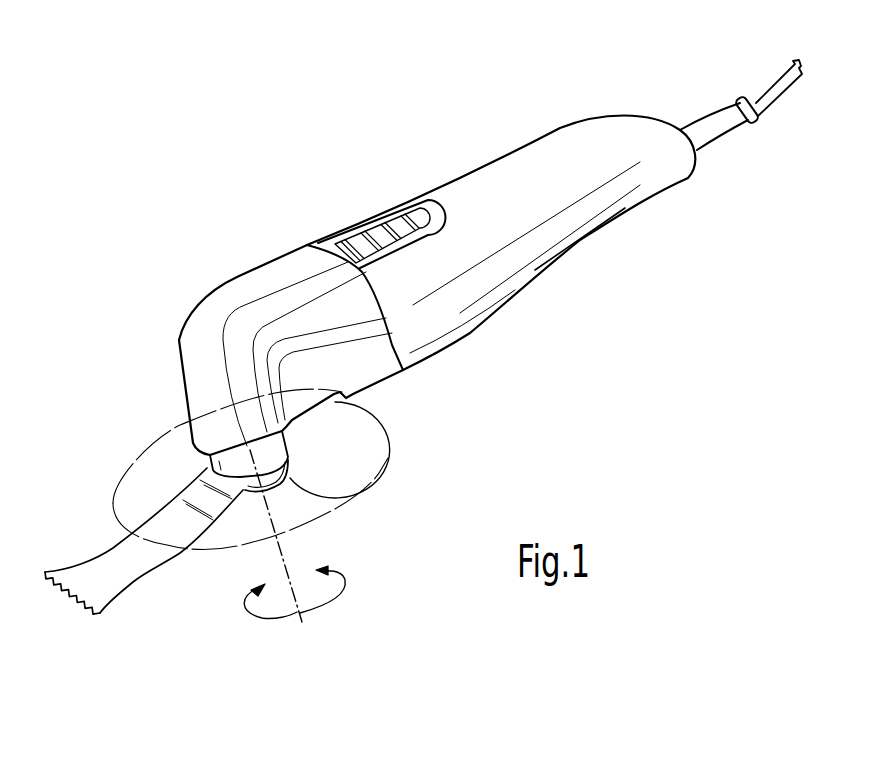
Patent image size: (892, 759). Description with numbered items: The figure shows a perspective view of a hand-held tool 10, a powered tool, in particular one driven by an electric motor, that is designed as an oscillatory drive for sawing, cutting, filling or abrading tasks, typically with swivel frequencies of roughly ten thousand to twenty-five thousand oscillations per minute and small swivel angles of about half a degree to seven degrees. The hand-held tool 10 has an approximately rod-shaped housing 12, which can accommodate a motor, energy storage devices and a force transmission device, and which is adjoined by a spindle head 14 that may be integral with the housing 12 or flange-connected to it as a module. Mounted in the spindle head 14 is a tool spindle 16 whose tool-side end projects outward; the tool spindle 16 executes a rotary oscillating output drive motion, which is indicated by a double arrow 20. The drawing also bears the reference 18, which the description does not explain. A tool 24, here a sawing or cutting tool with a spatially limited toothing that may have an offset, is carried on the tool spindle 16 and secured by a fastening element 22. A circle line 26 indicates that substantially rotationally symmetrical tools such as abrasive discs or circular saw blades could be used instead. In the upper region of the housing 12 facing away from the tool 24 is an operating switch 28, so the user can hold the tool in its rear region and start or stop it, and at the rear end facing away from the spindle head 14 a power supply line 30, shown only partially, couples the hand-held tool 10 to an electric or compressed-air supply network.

The hand-held tool 10 is at (308, 166).
The housing 12 is at (518, 173).
The spindle head 14 is at (277, 260).
The tool spindle 16 is at (208, 467).
The drive axis 18 is at (283, 548).
The double arrow 20 is at (327, 600).
The fastening element 22 is at (386, 476).
The tool 24 is at (130, 580).
The circle line 26 is at (388, 423).
The operating switch 28 is at (403, 220).
The power supply line 30 is at (770, 90).